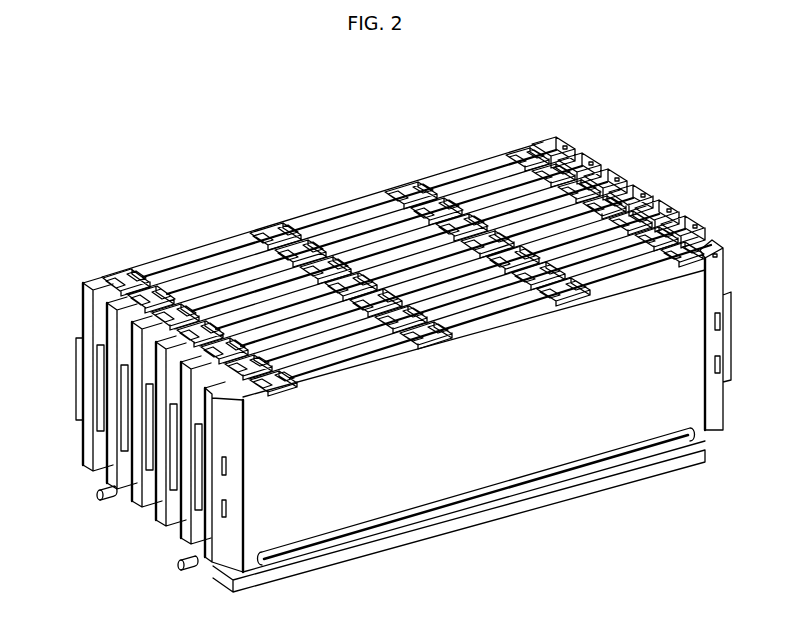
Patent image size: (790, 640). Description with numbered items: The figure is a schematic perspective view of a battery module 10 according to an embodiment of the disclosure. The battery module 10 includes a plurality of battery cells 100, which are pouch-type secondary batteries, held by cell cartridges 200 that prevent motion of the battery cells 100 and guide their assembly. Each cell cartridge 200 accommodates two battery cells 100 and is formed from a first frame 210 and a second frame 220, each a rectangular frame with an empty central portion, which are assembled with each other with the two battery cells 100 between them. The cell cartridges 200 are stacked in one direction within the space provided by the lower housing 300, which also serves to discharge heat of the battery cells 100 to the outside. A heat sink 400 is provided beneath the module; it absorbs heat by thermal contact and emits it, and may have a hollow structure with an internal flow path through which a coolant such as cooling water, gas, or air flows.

The battery module 10 is at (153, 133).
The battery cell 100 is at (92, 373).
The cell cartridge 200 is at (435, 110).
The first frame 210 is at (468, 168).
The second frame 220 is at (517, 173).
The lower housing 300 is at (338, 537).
The heat sink 400 is at (482, 534).